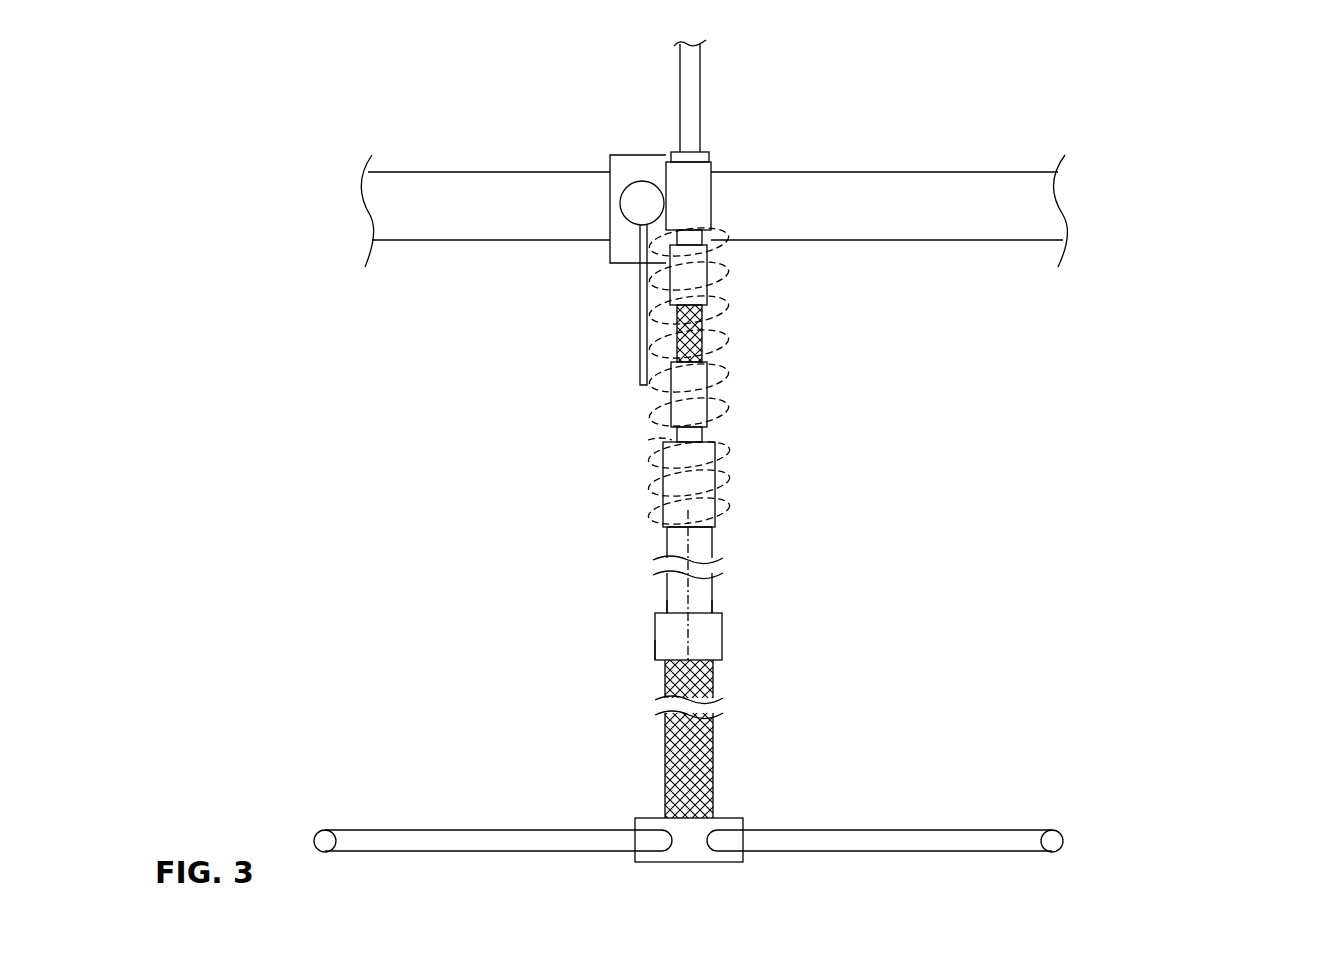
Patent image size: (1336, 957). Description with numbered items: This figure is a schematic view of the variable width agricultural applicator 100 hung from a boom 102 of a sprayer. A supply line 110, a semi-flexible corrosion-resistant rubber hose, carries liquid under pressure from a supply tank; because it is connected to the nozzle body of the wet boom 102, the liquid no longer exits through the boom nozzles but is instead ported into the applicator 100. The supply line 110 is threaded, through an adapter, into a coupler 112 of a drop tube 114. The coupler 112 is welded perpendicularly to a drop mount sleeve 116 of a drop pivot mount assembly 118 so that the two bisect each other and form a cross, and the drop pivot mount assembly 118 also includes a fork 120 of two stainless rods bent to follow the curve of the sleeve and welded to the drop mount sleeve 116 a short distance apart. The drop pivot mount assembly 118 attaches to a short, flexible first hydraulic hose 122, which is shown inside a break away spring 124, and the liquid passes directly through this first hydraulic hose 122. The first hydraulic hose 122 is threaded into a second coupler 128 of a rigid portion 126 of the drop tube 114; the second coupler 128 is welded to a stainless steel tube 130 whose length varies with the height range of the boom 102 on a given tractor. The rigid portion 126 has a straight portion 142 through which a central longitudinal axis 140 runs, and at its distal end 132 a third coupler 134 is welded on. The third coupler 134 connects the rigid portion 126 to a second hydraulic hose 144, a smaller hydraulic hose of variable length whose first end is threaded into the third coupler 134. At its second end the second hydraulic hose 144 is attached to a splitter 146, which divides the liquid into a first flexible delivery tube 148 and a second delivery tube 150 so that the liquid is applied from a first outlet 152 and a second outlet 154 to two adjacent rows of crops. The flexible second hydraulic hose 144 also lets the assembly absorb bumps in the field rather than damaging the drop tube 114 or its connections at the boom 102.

The variable width agricultural applicator 100 is at (1190, 88).
The boom 102 is at (965, 232).
The supply line 110 is at (690, 92).
The coupler 112 is at (712, 185).
The drop tube 114 is at (735, 133).
The drop mount sleeve 116 is at (627, 187).
The drop pivot mount assembly 118 is at (612, 143).
The fork 120 is at (711, 392).
The first hydraulic hose 122 is at (711, 326).
The break away spring 124 is at (650, 442).
The rigid portion 126 is at (600, 527).
The second coupler 128 is at (726, 474).
The stainless steel tube 130 is at (667, 540).
The distal end 132 is at (603, 650).
The third coupler 134 is at (722, 631).
The central longitudinal axis 140 is at (716, 538).
The straight portion 142 is at (715, 591).
The second hydraulic hose 144 is at (715, 736).
The splitter 146 is at (643, 818).
The first flexible delivery tube 148 is at (480, 828).
The second delivery tube 150 is at (900, 828).
The first outlet 152 is at (317, 833).
The second outlet 154 is at (1062, 832).